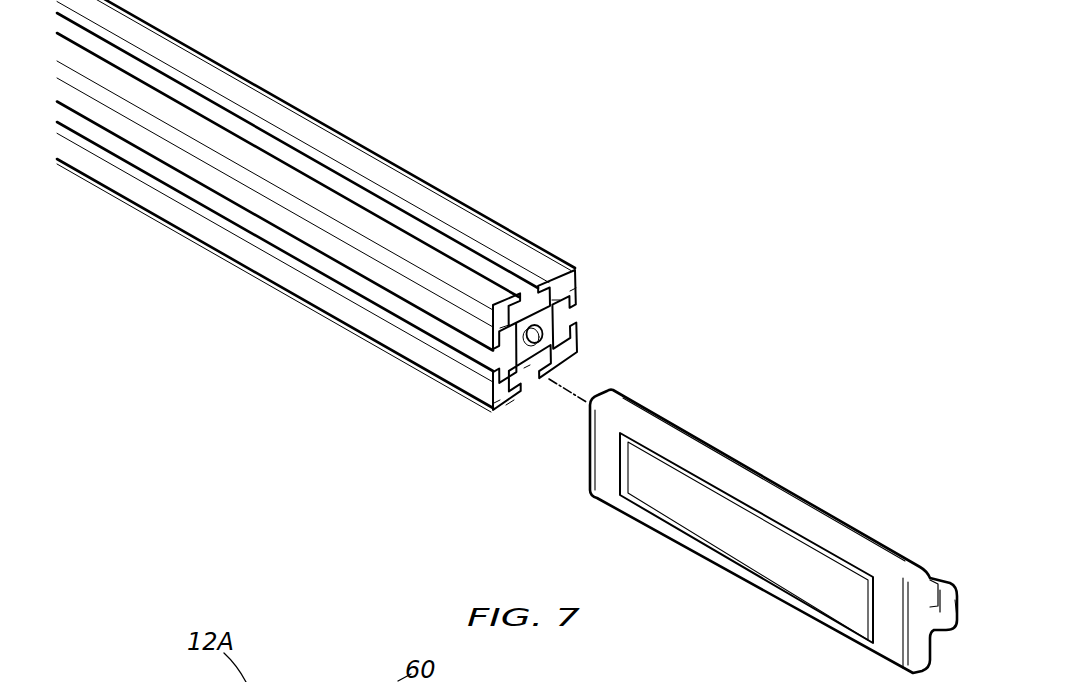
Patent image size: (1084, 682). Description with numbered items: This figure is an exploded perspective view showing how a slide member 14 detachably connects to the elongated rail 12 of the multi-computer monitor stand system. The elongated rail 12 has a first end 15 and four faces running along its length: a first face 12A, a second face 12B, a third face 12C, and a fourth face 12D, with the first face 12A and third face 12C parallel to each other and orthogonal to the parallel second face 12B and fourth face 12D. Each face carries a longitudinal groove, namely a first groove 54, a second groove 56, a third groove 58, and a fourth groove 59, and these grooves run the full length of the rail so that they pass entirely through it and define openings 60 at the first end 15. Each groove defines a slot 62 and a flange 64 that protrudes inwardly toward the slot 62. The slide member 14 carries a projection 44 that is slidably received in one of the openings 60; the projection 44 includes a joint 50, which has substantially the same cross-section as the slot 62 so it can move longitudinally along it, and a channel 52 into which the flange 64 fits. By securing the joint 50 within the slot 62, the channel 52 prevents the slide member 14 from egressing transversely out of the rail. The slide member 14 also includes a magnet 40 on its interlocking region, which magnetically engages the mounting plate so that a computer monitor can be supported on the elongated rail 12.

The elongated rail 12 is at (365, 238).
The first face 12A is at (460, 378).
The second face 12B is at (472, 231).
The third face 12C is at (580, 284).
The fourth face 12D is at (511, 405).
The slide member 14 is at (786, 533).
The first end 15 is at (584, 284).
The magnet 40 is at (745, 541).
The projection 44 is at (958, 612).
The joint 50 is at (950, 608).
The channel 52 is at (931, 580).
The first groove 54 is at (330, 270).
The second groove 56 is at (403, 220).
The third groove 58 is at (555, 330).
The fourth groove 59 is at (529, 366).
The opening 60 is at (493, 403).
The slot 62 is at (542, 361).
The flange 64 is at (507, 338).